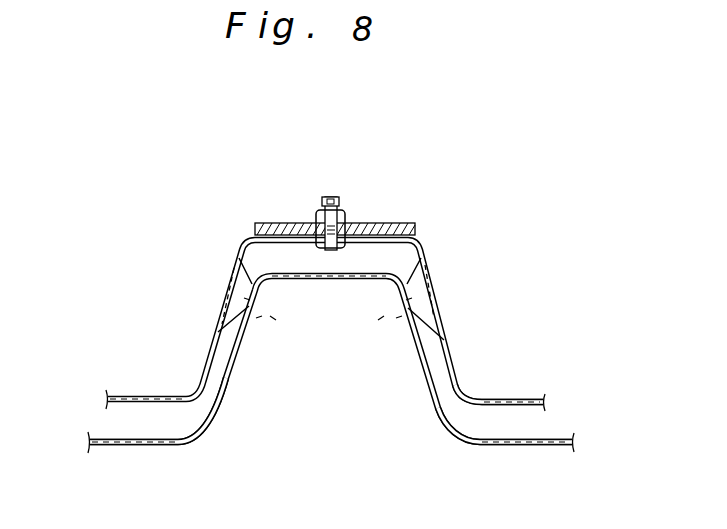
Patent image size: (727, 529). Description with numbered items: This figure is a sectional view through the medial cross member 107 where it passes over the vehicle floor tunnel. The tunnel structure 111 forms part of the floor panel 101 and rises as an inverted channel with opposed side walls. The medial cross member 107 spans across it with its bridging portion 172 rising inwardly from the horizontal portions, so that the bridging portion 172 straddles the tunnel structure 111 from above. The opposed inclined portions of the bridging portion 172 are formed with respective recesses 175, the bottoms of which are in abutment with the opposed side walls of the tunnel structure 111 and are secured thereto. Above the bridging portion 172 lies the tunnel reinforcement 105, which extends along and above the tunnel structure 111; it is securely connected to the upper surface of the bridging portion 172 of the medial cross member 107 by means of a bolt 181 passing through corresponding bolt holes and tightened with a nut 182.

The floor panel 101 is at (548, 440).
The tunnel reinforcement 105 is at (255, 227).
The medial cross member 107 is at (495, 398).
The tunnel structure 111 is at (233, 352).
The bridging portion 172 is at (418, 232).
The recesses 175 is at (237, 281).
The bolt 181 is at (328, 250).
The nut 182 is at (343, 216).